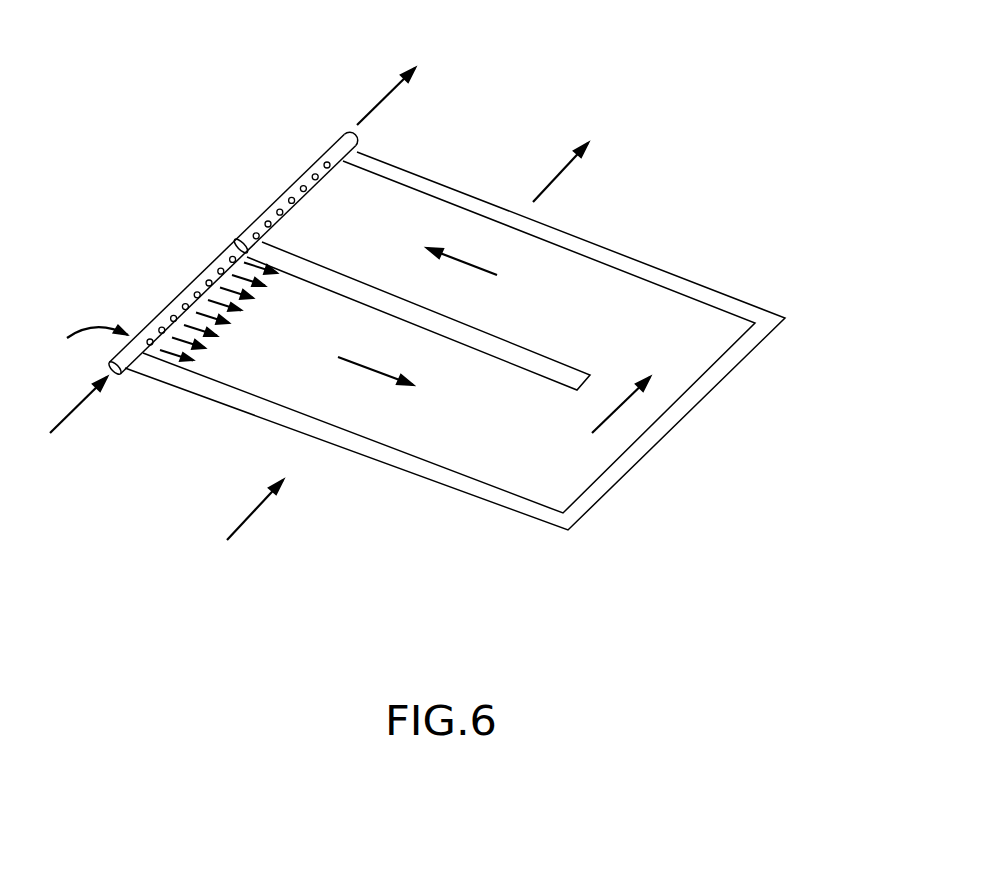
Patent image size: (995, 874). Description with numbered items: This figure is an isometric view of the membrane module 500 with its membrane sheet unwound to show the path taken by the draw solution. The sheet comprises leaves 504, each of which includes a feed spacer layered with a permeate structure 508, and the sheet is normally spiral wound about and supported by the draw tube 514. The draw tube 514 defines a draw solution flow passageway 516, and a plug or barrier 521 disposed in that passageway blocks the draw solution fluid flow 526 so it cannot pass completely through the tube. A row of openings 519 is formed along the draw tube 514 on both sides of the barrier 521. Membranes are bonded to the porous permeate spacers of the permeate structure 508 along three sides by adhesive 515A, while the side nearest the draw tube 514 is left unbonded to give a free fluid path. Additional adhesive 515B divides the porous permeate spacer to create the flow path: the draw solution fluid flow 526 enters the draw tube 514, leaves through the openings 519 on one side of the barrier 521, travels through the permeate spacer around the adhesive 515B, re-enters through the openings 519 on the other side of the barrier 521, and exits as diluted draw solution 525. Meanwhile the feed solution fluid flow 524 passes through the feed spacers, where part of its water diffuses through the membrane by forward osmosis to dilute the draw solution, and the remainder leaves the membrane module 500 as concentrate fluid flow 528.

The membrane module 500 is at (750, 41).
The leaves 504 is at (637, 287).
The permeate structure 508 is at (477, 341).
The draw tube 514 is at (176, 304).
The adhesive 515A is at (733, 304).
The additional adhesive 515B is at (513, 358).
The draw solution flow passageway 516 is at (118, 376).
The openings 519 is at (318, 170).
The barrier 521 is at (245, 235).
The feed solution fluid flow 524 is at (252, 518).
The diluted draw solution 525 is at (400, 82).
The draw solution fluid flow 526 is at (405, 394).
The concentrate fluid flow 528 is at (557, 181).